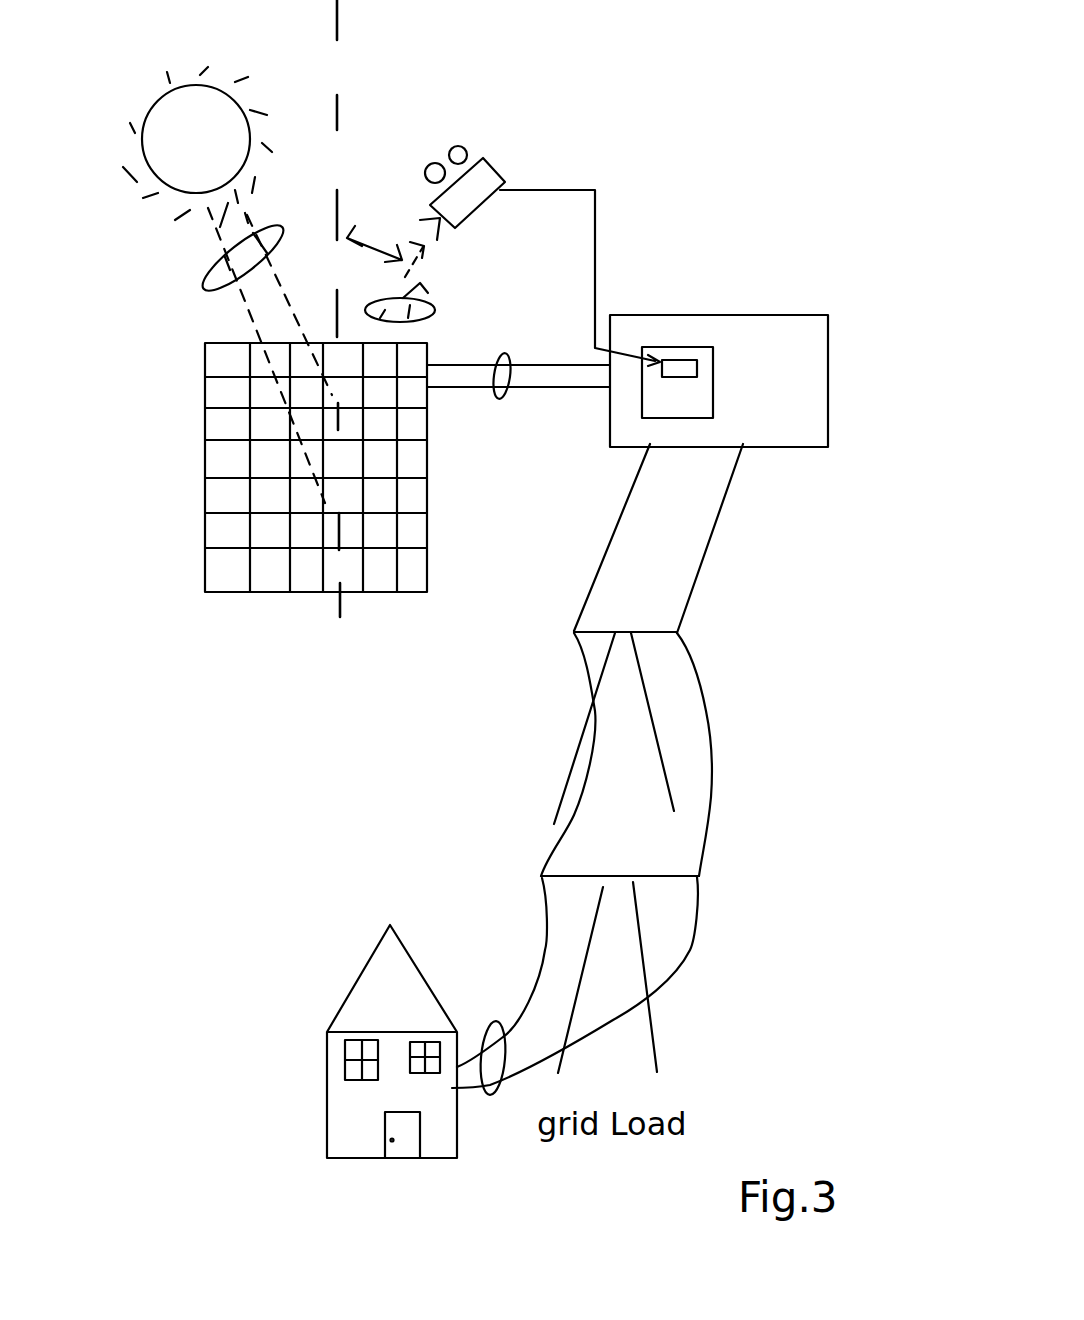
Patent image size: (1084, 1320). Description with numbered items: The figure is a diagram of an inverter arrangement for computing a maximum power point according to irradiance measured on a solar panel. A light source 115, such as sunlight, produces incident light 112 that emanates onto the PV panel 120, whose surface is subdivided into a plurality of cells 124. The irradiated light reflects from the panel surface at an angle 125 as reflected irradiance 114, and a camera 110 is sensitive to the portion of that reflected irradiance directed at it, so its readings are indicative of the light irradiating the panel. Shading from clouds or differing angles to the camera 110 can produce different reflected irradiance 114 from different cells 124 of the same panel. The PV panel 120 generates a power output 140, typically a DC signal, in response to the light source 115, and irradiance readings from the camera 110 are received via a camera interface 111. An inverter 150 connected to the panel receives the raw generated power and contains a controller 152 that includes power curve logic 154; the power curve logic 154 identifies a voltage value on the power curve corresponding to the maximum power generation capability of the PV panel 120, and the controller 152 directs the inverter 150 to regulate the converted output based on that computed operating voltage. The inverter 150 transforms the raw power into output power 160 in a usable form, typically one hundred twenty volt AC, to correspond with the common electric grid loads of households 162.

The camera 110 is at (487, 202).
The camera interface 111 is at (597, 252).
The incident light 112 is at (200, 280).
The reflected irradiance 114 is at (437, 312).
The light source 115 is at (212, 90).
The PV panel 120 is at (180, 398).
The cells 124 is at (408, 567).
The angle 125 is at (368, 238).
The power output 140 is at (503, 400).
The inverter 150 is at (769, 381).
The controller 152 is at (715, 400).
The power curve logic 154 is at (697, 362).
The output power 160 is at (492, 1020).
The households 162 is at (355, 977).